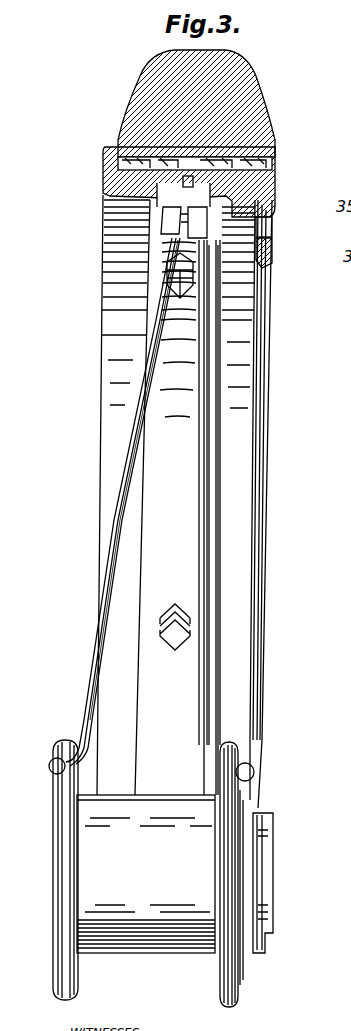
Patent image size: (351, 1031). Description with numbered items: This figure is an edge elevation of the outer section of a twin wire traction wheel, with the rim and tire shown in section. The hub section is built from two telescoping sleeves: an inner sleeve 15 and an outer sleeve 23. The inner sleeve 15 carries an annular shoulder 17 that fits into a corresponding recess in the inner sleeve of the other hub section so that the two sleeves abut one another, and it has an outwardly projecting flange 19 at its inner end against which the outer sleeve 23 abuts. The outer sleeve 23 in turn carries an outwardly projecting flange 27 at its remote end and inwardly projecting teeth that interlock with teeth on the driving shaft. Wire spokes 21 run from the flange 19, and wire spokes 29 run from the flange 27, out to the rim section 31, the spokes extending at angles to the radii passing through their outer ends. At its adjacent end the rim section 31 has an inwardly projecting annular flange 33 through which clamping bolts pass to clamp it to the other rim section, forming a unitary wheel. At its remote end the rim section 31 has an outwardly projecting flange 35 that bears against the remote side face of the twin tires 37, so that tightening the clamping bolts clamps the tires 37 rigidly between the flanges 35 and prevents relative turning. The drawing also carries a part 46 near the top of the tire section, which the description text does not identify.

The twin tires 37 is at (243, 94).
The plate 46 is at (205, 164).
The outwardly projecting flanges 35 is at (110, 160).
The rim section 31 is at (107, 203).
The inwardly projecting annular flanges 33 is at (268, 253).
The wire spokes 29 is at (92, 713).
The wire spokes 21 is at (215, 672).
The inner sleeve 15 is at (175, 648).
The outwardly projecting flange 27 is at (54, 984).
The outwardly projecting flange 19 is at (238, 752).
The annular shoulder 17 is at (267, 813).
The outer sleeve 23 is at (172, 955).